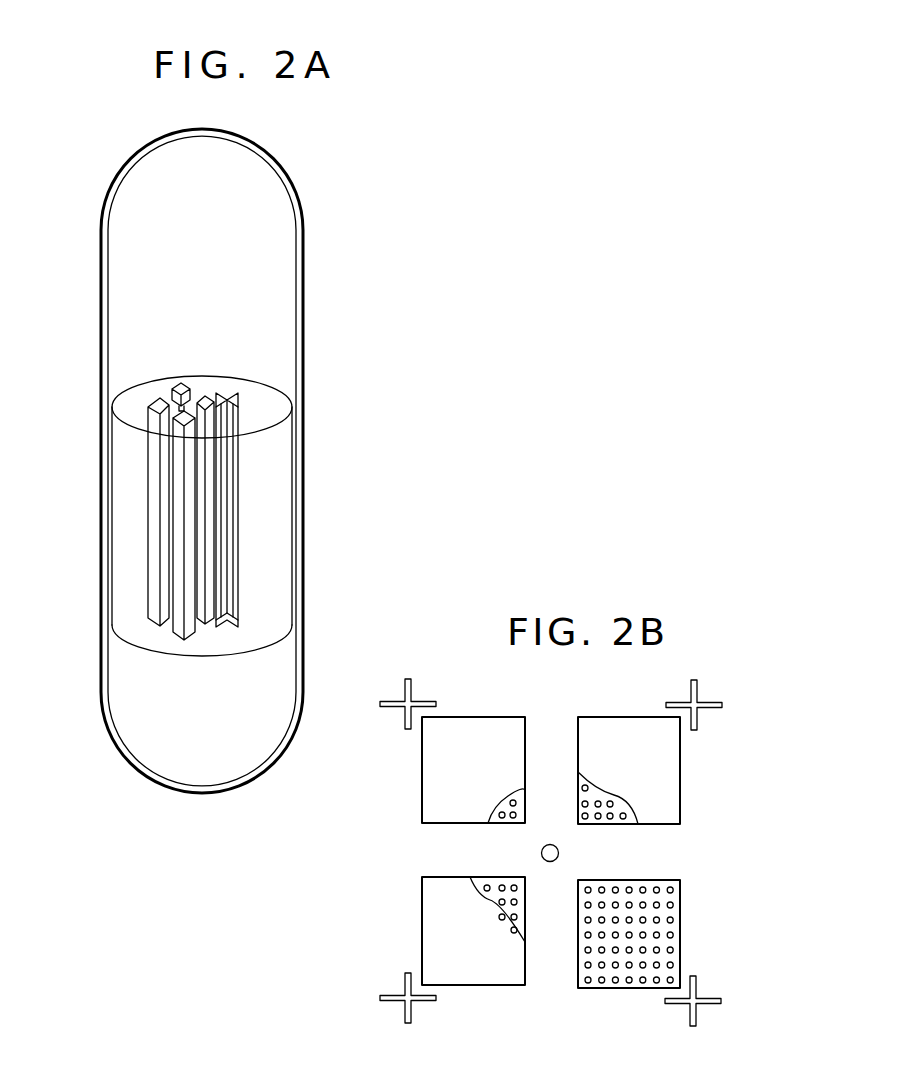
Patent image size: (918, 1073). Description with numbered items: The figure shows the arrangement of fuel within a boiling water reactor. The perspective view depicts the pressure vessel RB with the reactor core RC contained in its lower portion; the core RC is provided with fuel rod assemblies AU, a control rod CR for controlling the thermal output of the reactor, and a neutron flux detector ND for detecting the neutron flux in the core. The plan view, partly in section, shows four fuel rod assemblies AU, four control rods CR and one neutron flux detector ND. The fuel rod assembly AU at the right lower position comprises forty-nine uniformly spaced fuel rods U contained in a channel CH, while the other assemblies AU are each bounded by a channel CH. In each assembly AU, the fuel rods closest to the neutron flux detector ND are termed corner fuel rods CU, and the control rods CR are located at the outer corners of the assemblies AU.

In FIG. 2A, the pressure vessel RB is at (304, 221).
In FIG. 2A, the reactor core RC is at (120, 408).
In FIG. 2A, the fuel rod assembly AU is at (150, 538).
In FIG. 2B, the fuel rod assembly AU is at (485, 724).
In FIG. 2A, the control rod CR is at (235, 510).
In FIG. 2B, the control rod CR is at (411, 693).
In FIG. 2A, the neutron flux detector ND is at (185, 384).
In FIG. 2B, the neutron flux detector ND is at (559, 856).
In FIG. 2B, the channel CH is at (422, 770).
In FIG. 2B, the corner fuel rod CU is at (513, 820).
In FIG. 2B, the fuel rod U is at (516, 803).